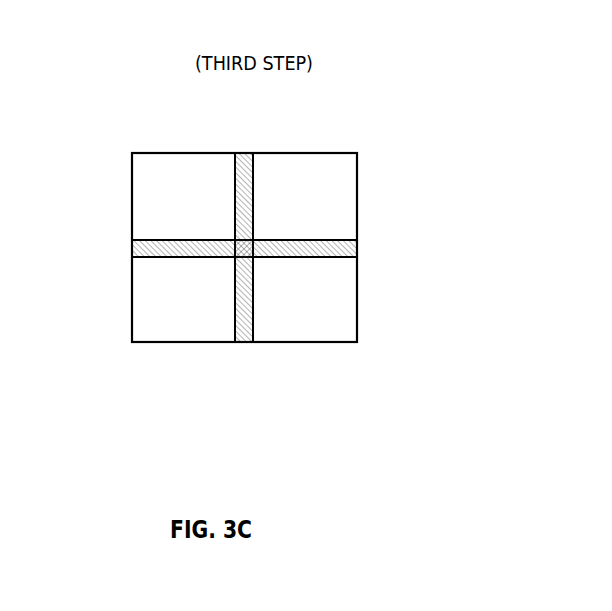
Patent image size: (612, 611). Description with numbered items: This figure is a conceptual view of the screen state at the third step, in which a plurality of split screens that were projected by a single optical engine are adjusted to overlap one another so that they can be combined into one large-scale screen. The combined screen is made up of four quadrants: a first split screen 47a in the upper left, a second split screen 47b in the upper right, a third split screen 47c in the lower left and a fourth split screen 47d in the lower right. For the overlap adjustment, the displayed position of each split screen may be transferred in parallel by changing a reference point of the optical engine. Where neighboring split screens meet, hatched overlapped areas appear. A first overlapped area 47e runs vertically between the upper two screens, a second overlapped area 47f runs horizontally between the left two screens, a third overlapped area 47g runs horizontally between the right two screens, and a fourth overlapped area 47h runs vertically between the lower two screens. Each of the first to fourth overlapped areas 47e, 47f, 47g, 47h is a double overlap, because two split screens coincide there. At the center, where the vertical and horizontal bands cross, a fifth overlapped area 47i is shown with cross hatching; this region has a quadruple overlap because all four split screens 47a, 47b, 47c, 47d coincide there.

The first split screen 47a is at (132, 190).
The second split screen 47b is at (357, 193).
The third split screen 47c is at (132, 292).
The fourth split screen 47d is at (357, 306).
The first overlapped area 47e is at (243, 154).
The second overlapped area 47f is at (132, 248).
The third overlapped area 47g is at (357, 248).
The fourth overlapped area 47h is at (243, 341).
The fifth overlapped area 47i is at (248, 252).